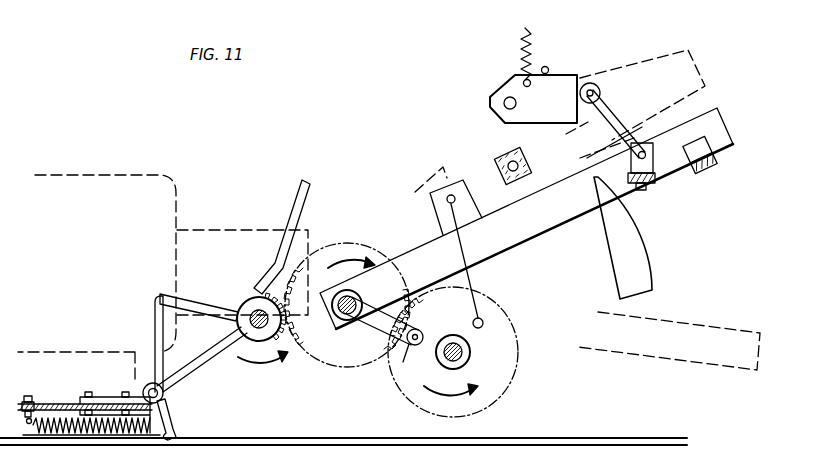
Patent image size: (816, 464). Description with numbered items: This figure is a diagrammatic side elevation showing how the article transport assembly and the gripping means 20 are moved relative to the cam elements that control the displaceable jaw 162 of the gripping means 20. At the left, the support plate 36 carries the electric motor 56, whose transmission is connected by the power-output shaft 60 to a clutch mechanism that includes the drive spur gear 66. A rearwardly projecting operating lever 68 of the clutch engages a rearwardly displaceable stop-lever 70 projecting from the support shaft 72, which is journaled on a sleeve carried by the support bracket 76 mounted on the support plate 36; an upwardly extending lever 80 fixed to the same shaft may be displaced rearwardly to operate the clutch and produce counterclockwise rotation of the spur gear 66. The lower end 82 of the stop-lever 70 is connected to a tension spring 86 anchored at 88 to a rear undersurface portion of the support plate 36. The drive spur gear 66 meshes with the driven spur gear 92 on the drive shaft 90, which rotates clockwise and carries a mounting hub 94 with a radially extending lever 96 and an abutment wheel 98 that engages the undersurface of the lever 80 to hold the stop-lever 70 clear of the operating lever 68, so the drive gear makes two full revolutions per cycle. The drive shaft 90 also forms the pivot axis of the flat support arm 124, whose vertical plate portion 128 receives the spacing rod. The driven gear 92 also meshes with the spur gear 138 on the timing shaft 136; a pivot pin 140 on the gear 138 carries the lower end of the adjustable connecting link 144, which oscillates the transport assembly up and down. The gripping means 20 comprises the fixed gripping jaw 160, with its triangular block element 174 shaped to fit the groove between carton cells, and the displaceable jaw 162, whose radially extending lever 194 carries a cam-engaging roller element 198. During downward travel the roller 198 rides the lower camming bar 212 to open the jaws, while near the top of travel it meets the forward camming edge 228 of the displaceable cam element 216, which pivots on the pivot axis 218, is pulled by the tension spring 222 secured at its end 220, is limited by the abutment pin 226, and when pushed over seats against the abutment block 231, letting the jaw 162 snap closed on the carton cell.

The gripping means 20 is at (727, 165).
The support plate 36 is at (52, 402).
The electric motor 56 is at (113, 174).
The power-output shaft 60 is at (250, 327).
The drive spur gear 66 is at (252, 342).
The operating lever 68 is at (190, 296).
The stop-lever 70 is at (155, 320).
The support shaft 72 is at (165, 394).
The support bracket 76 is at (108, 397).
The lever 80 is at (308, 200).
The lower end of lever 82 is at (173, 415).
The tension spring 86 is at (93, 430).
The anchor 88 is at (27, 427).
The drive shaft 90 is at (345, 321).
The driven spur gear 92 is at (300, 348).
The mounting hub 94 is at (360, 298).
The radially extending lever 96 is at (392, 340).
The abutment wheel 98 is at (397, 355).
The support arm 124 is at (414, 249).
The plate portion 128 is at (431, 206).
The timing shaft 136 is at (461, 355).
The spur gear 138 is at (426, 397).
The pivot pin 140 is at (484, 322).
The adjustable connecting link 144 is at (472, 277).
The fixed gripping jaw 160 is at (696, 166).
The displaceable jaw 162 is at (655, 186).
The triangular block element 174 is at (716, 138).
The radially extending lever 194 is at (618, 122).
The cam-engaging roller element 198 is at (602, 86).
The lower camming bar 212 is at (642, 253).
The displaceable cam element 216 is at (562, 82).
The pivot axis 218 is at (505, 97).
The end of tension spring 220 is at (530, 86).
The tension spring 222 is at (522, 33).
The abutment pin 226 is at (547, 66).
The camming edge 228 is at (583, 66).
The abutment block 231 is at (501, 158).